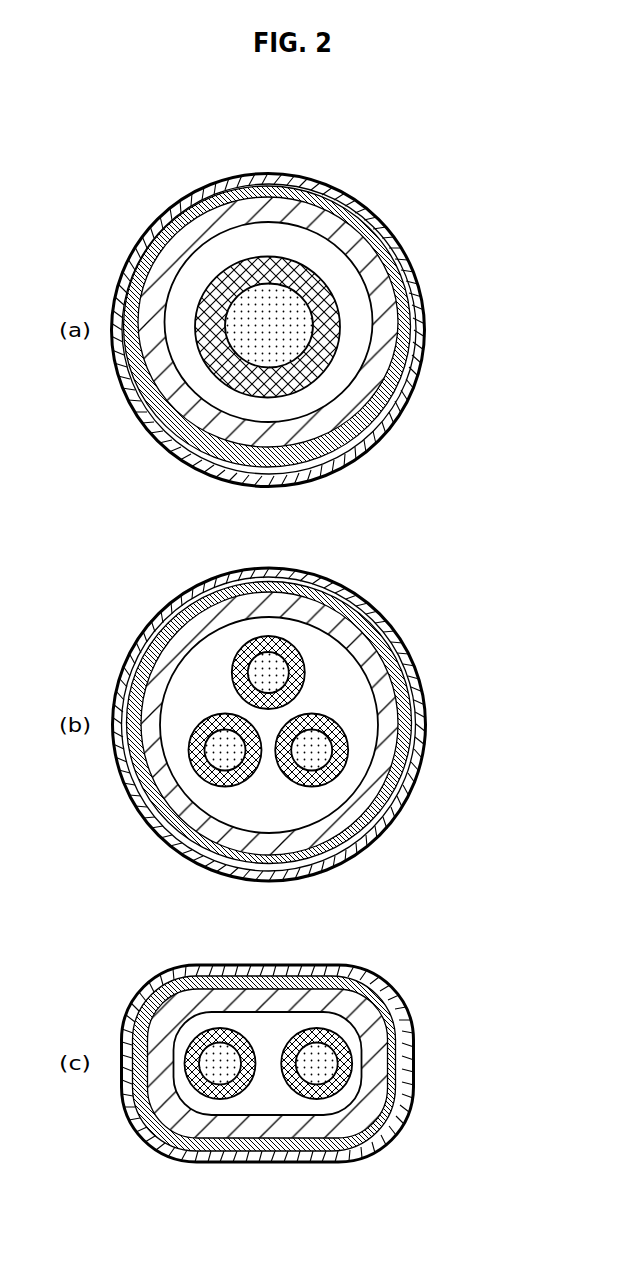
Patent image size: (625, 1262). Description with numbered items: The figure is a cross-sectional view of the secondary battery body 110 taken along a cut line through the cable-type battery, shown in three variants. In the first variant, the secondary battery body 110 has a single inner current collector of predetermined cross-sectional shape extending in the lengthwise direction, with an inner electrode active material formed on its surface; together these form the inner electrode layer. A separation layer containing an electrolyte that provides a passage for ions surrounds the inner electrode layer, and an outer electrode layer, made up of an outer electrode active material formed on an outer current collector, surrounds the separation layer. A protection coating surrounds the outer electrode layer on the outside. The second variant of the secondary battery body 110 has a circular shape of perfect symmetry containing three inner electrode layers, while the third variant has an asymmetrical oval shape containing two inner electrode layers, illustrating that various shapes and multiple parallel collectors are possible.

The secondary battery body 110 is at (155, 136).